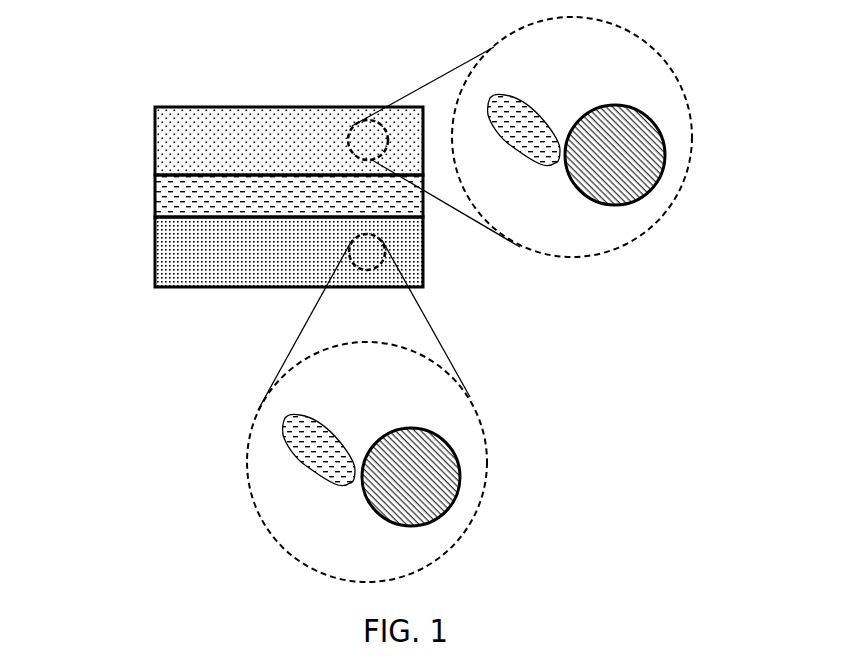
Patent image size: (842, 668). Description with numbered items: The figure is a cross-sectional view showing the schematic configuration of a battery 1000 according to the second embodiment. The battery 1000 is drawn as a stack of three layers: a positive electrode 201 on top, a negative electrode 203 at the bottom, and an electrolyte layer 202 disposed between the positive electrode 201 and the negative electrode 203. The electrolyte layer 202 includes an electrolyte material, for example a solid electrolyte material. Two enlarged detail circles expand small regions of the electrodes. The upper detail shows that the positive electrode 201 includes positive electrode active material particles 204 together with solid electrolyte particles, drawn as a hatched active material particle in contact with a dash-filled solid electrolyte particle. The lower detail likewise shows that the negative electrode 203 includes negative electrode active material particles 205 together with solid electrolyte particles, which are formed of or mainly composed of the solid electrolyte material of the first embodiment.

The battery 1000 is at (230, 160).
The positive electrode 201 is at (190, 127).
The electrolyte layer 202 is at (190, 193).
The negative electrode 203 is at (190, 251).
The positive electrode active material particles 204 is at (632, 155).
The negative electrode active material particles 205 is at (423, 472).